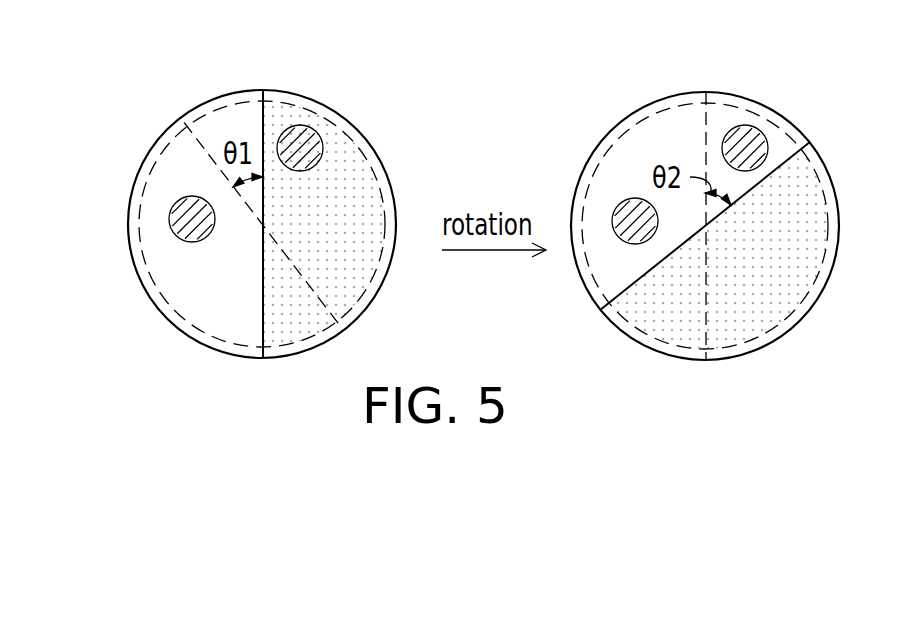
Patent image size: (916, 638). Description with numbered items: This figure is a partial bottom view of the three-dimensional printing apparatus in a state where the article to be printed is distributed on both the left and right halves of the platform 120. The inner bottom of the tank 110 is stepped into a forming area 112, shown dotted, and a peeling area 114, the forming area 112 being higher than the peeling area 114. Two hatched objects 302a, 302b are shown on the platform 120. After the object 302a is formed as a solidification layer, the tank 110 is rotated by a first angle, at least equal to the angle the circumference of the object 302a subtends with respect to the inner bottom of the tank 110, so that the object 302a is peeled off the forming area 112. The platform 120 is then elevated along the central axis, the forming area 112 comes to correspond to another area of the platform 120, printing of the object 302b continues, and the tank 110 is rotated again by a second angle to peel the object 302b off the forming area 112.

The tank 110 is at (148, 303).
The platform 120 is at (155, 142).
The forming area 112 is at (333, 150).
The peeling area 114 is at (230, 127).
The object 302a is at (168, 218).
The object 302b is at (310, 125).